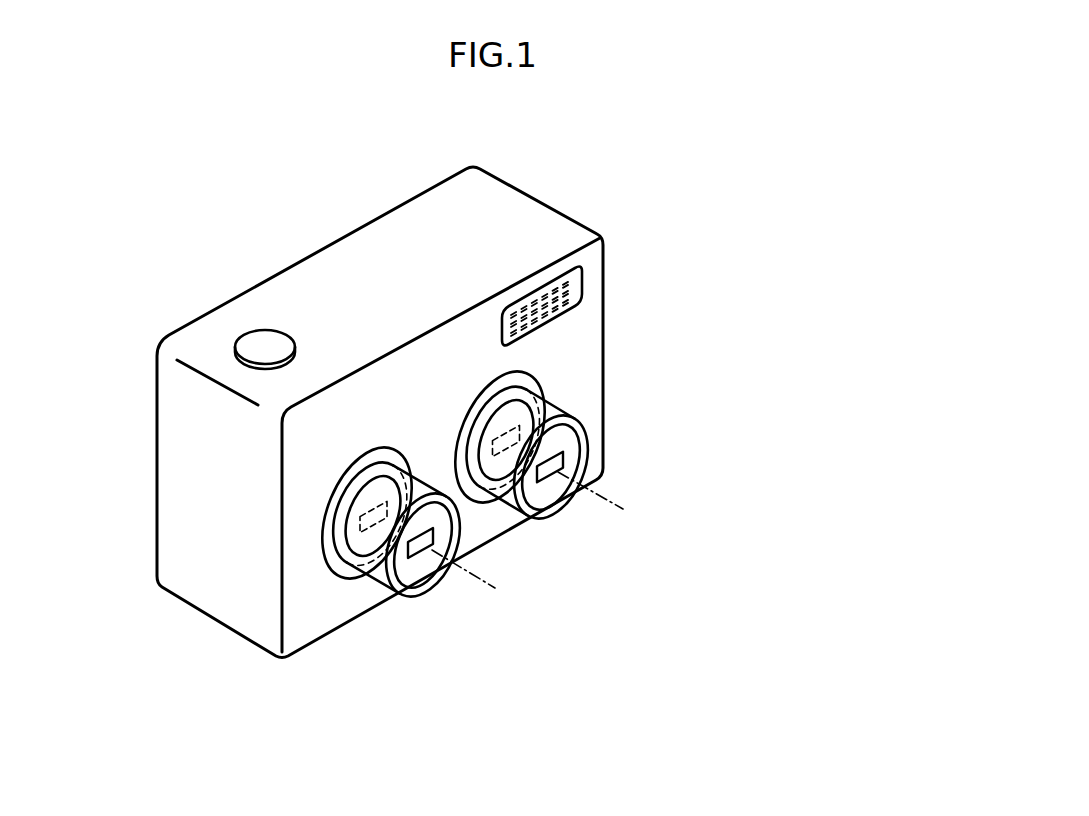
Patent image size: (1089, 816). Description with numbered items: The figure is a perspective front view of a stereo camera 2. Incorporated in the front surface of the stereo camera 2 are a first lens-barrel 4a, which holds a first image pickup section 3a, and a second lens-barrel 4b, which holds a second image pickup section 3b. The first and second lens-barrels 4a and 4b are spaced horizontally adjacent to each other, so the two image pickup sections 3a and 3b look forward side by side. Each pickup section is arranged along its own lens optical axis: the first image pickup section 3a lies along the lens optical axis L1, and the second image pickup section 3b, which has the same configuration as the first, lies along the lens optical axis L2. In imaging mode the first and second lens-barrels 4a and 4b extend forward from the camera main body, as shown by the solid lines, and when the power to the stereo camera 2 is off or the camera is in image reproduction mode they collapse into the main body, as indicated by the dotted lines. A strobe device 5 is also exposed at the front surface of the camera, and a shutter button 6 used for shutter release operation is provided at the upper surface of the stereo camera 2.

The stereo camera 2 is at (167, 233).
The shutter button 6 is at (252, 340).
The strobe device 5 is at (580, 284).
The first lens-barrel 4a is at (371, 583).
The second lens-barrel 4b is at (556, 403).
The first image pickup section 3a is at (429, 549).
The second image pickup section 3b is at (557, 472).
The lens optical axis L1 is at (482, 580).
The lens optical axis L2 is at (610, 503).